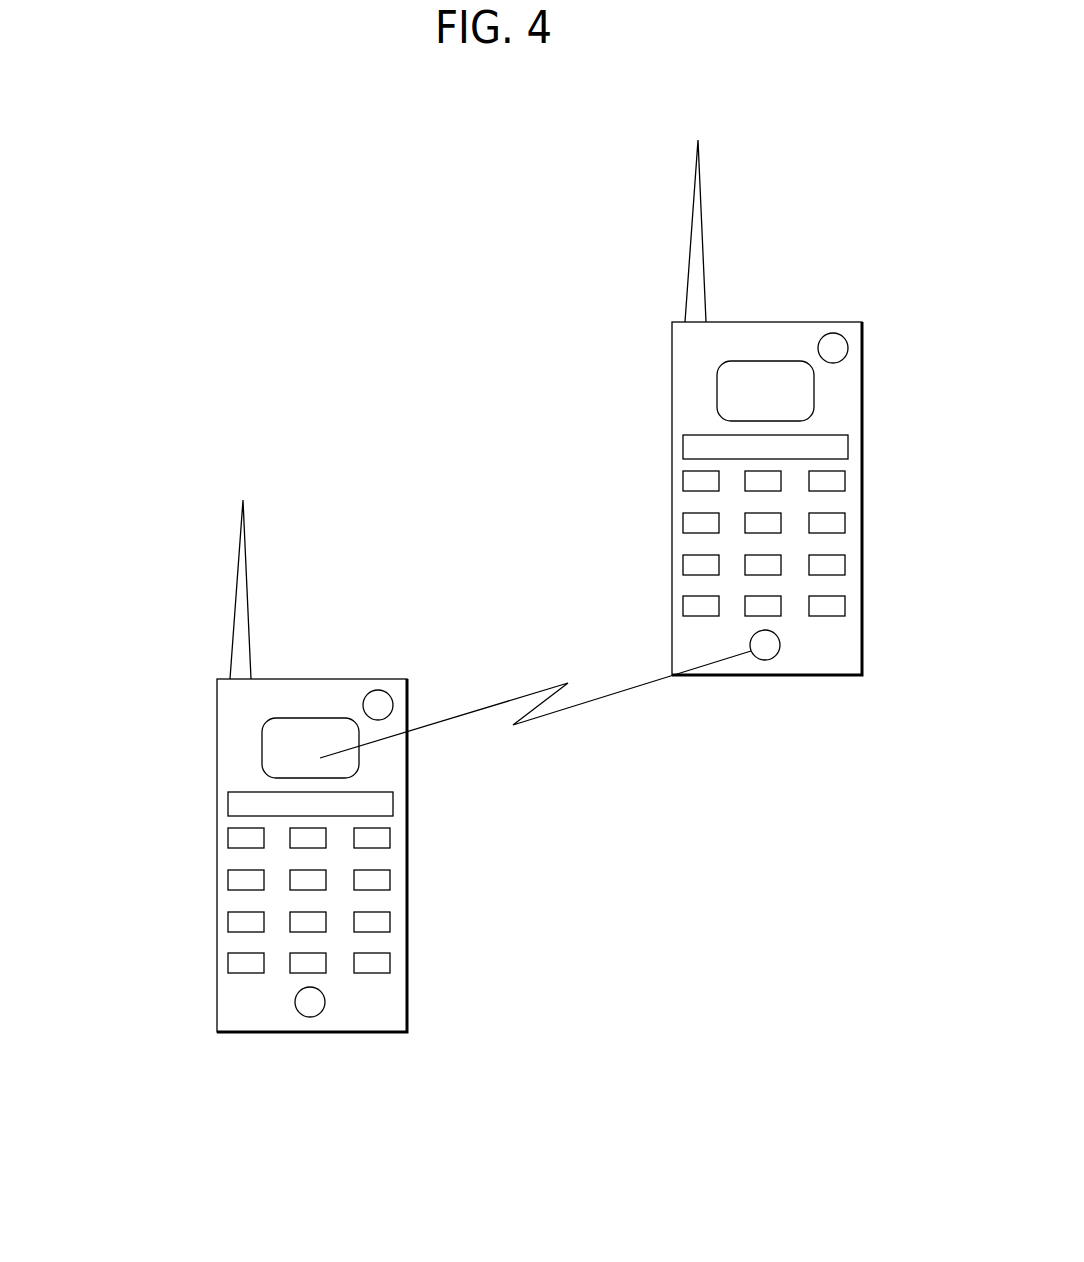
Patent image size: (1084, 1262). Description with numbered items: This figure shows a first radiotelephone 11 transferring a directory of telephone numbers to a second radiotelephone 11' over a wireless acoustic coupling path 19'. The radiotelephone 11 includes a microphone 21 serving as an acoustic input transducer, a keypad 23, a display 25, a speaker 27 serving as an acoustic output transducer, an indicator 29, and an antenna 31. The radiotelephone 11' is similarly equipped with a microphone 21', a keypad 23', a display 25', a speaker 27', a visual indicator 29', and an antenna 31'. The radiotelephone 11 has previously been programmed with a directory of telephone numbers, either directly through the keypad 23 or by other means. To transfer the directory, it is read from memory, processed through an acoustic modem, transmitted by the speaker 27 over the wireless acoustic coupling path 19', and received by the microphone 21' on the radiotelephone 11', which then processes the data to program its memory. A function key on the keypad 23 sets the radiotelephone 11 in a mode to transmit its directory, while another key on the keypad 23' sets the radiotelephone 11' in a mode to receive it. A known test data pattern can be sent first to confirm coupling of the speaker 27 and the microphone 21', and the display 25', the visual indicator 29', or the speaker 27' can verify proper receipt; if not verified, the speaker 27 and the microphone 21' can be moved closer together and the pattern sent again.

The radiotelephone 11 is at (366, 808).
The radiotelephone 11' is at (657, 446).
The wireless acoustic coupling path 19' is at (535, 714).
The microphone 21 is at (217, 1010).
The microphone 21' is at (812, 695).
The keypad 23 is at (402, 900).
The keypad 23' is at (819, 543).
The display 25 is at (244, 781).
The display 25' is at (695, 420).
The speaker 27 is at (231, 725).
The speaker 27' is at (686, 367).
The indicator 29 is at (349, 671).
The visual indicator 29' is at (878, 329).
The antenna 31 is at (173, 588).
The antenna 31' is at (628, 227).